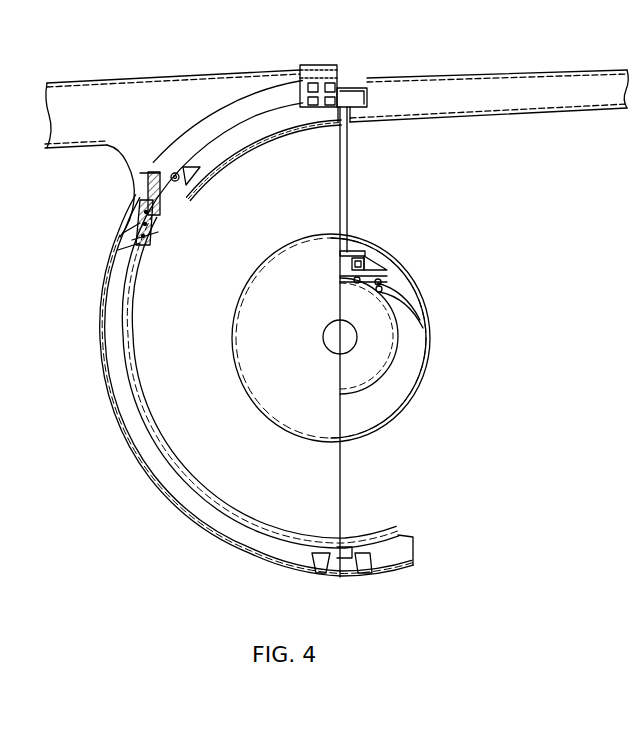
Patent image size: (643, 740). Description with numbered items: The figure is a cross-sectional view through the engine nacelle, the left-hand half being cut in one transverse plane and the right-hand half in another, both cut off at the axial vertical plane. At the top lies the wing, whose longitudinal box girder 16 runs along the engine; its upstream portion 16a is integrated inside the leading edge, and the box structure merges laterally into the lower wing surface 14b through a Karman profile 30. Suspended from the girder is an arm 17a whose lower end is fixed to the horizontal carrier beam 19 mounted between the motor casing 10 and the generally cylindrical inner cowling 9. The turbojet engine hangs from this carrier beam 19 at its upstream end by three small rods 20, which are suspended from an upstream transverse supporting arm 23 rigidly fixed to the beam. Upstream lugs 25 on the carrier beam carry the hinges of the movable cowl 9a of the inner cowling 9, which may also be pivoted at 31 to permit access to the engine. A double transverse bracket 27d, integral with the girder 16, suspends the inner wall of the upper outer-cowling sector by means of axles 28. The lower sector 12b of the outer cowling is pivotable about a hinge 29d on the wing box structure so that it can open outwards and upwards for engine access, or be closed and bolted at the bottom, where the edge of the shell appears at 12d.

The inner cowling 9 is at (235, 310).
The movable cowl of the inner cowling 9a is at (432, 355).
The motor casing 10 is at (385, 372).
The lower sector of the outer cowling 12b is at (198, 522).
The housing cut-off 12d is at (372, 562).
The lower wing surface 14b is at (499, 108).
The longitudinal box girder 16 is at (310, 80).
The upstream portion of the girder 16a is at (355, 92).
The arm 17a is at (350, 193).
The horizontal carrier beam 19 is at (358, 258).
The small rods 20 is at (385, 282).
The upstream transverse supporting arm 23 is at (382, 290).
The upstream lugs 25 is at (366, 262).
The double transverse bracket 27d is at (209, 134).
The axles 28 is at (180, 183).
The hinge 29d is at (153, 235).
The Karman profile 30 is at (113, 155).
The pivot 31 is at (380, 270).